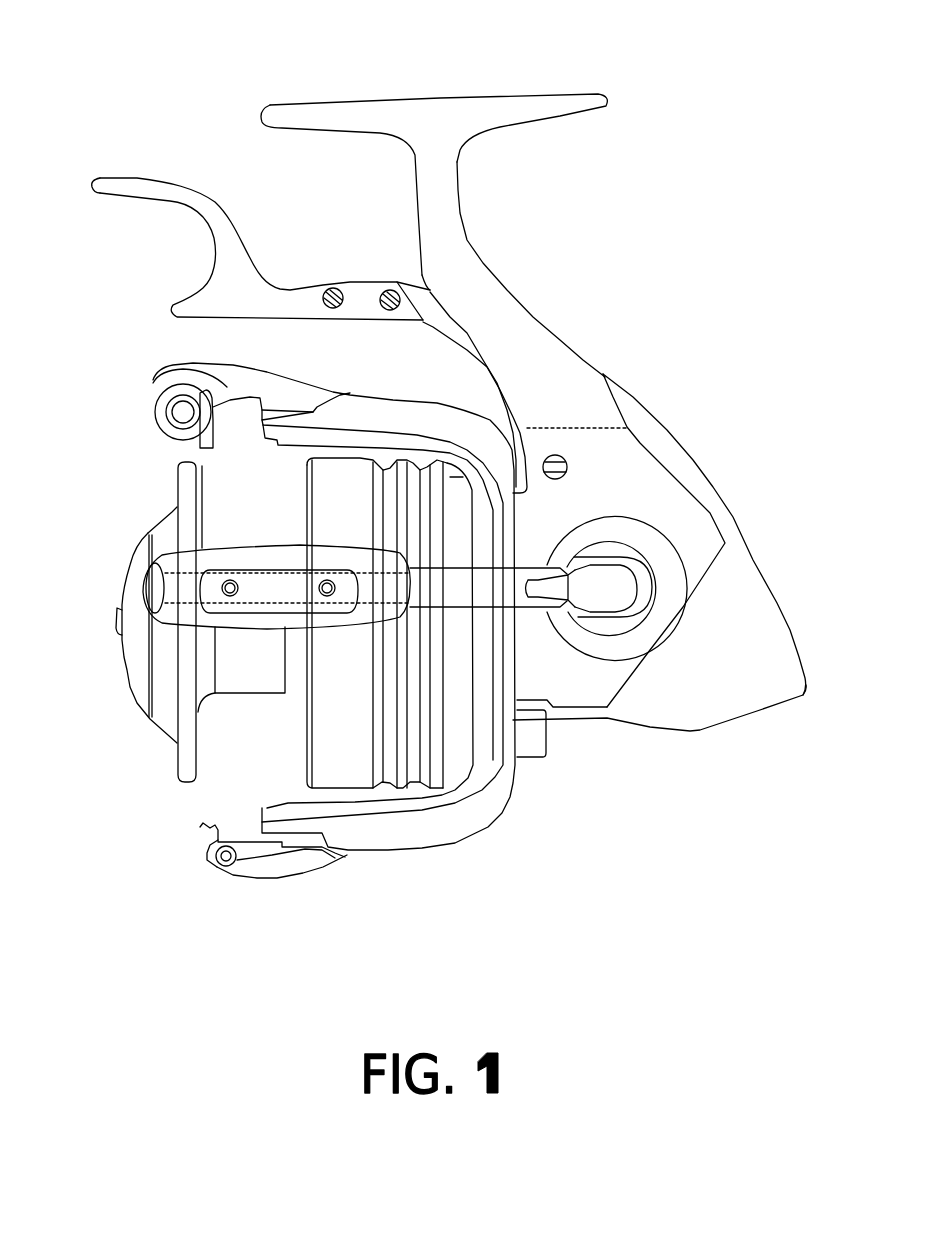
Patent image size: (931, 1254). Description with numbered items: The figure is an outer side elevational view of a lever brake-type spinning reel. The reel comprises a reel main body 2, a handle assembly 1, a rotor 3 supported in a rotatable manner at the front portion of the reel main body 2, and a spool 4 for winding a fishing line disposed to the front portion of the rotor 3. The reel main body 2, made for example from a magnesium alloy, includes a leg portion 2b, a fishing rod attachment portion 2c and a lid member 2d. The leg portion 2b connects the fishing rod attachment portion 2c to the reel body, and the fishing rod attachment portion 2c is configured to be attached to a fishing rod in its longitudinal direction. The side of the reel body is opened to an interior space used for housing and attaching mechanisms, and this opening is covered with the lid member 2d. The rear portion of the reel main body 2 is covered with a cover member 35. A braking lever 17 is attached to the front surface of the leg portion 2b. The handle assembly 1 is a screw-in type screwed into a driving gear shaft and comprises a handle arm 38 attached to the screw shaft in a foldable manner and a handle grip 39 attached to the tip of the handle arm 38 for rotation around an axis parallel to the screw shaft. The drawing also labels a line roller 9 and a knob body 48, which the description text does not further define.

The handle assembly 1 is at (165, 628).
The reel main body 2 is at (590, 830).
The leg portion 2b is at (557, 350).
The fishing rod attachment portion 2c is at (437, 110).
The lid member 2d is at (647, 478).
The rotor 3 is at (388, 908).
The spool 4 is at (173, 799).
The line roller 9 is at (143, 353).
The braking lever 17 is at (306, 268).
The cover member 35 is at (775, 633).
The handle arm 38 is at (450, 503).
The handle grip 39 is at (162, 550).
The knob body 48 is at (123, 697).